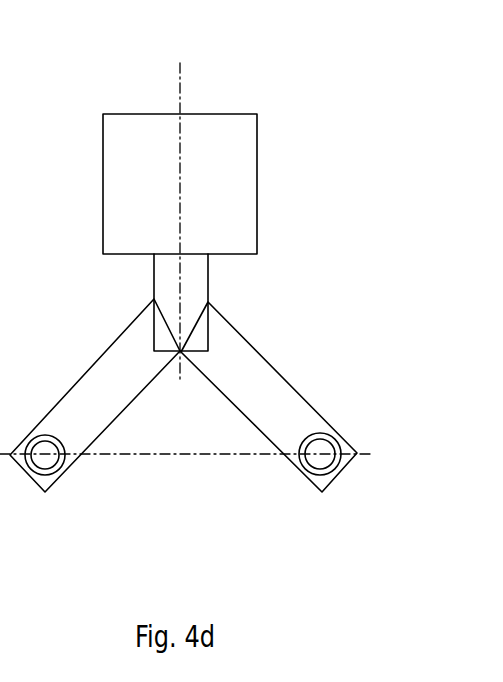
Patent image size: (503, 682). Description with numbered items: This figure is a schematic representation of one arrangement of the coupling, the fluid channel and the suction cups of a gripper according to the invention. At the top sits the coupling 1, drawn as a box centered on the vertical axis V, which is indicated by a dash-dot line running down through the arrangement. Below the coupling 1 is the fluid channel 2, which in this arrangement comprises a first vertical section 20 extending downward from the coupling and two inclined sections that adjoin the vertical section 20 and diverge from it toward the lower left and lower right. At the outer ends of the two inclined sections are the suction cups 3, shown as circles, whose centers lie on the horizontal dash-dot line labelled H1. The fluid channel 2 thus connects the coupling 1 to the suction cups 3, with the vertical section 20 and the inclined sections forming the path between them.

The coupling 1 is at (279, 91).
The fluid channel 2 is at (247, 525).
The suction cups 3 is at (43, 455).
The first vertical section 20 is at (198, 278).
The vertical axis V is at (180, 70).
The horizontal axis H1 is at (157, 449).